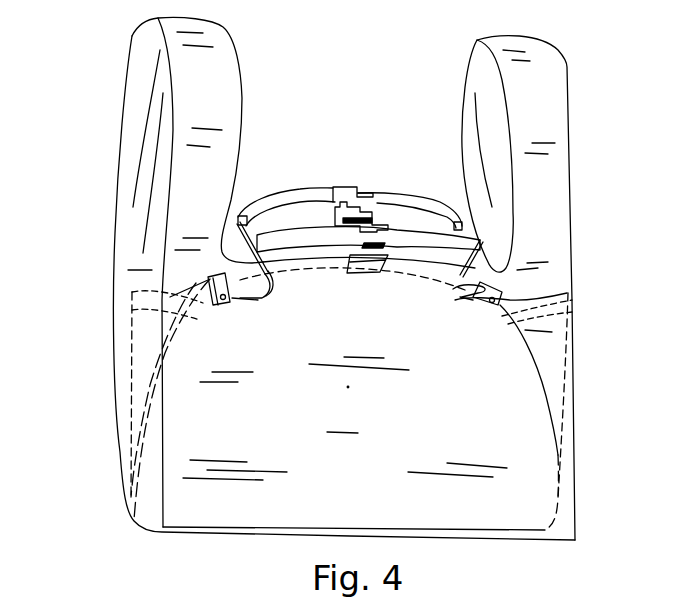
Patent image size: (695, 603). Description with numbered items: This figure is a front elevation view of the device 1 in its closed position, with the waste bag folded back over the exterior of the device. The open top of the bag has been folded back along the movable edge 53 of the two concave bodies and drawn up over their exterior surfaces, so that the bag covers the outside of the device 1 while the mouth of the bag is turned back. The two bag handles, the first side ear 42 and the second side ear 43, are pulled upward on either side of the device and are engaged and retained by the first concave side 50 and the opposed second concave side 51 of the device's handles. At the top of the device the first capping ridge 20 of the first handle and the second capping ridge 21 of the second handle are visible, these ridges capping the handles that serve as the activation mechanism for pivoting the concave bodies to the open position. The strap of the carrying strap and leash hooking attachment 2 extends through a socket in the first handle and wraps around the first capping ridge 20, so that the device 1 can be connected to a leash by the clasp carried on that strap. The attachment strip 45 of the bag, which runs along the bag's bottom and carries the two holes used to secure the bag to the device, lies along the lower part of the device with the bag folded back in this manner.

The device 1 is at (290, 173).
The carrying strap and leash hooking attachment 2 is at (586, 262).
The first capping ridge 20 is at (375, 193).
The second capping ridge 21 is at (330, 235).
The first side ear 42 is at (473, 65).
The second side ear 43 is at (143, 50).
The attachment strip 45 is at (147, 293).
The first concave side 50 is at (220, 275).
The second concave side 51 is at (236, 216).
The movable edge 53 is at (190, 527).